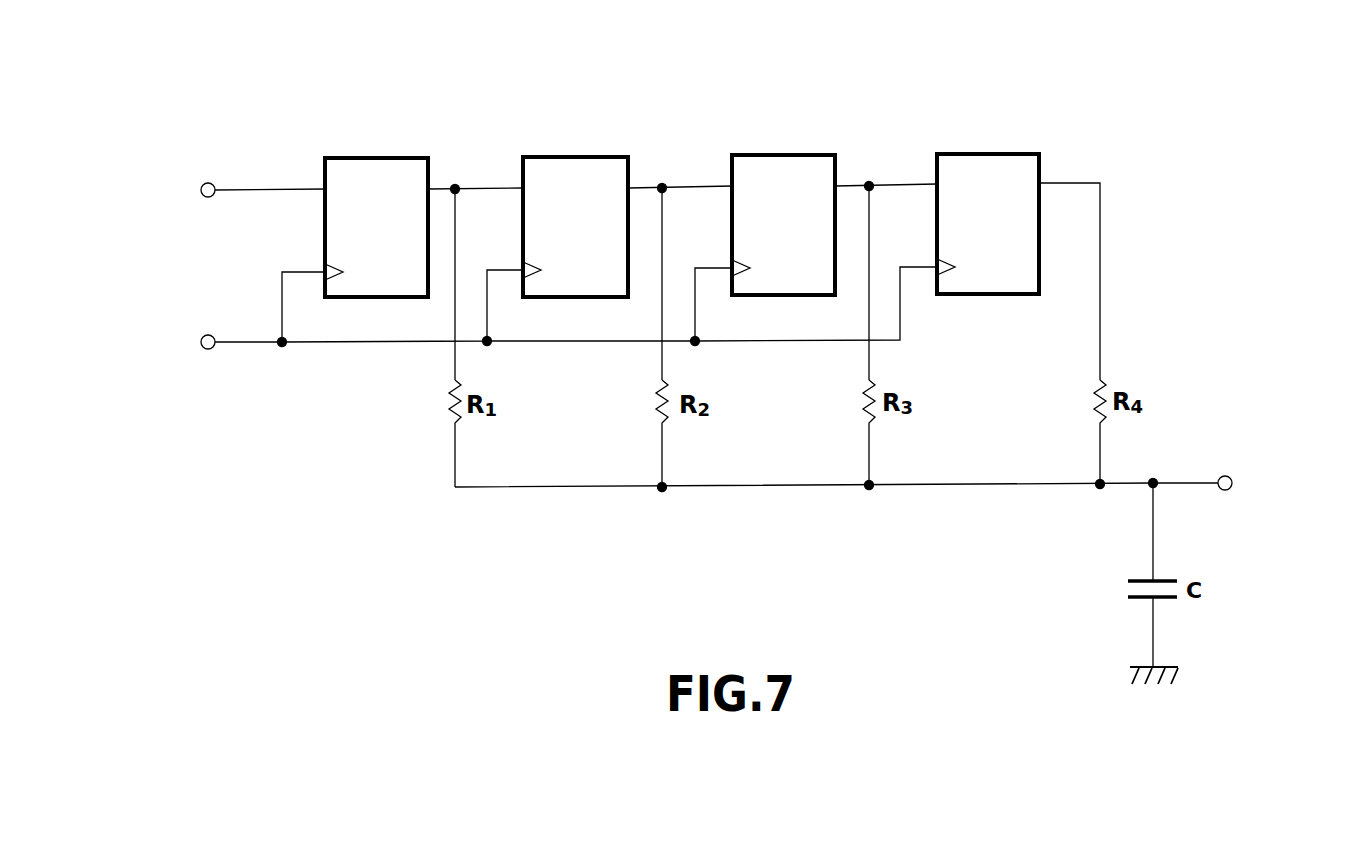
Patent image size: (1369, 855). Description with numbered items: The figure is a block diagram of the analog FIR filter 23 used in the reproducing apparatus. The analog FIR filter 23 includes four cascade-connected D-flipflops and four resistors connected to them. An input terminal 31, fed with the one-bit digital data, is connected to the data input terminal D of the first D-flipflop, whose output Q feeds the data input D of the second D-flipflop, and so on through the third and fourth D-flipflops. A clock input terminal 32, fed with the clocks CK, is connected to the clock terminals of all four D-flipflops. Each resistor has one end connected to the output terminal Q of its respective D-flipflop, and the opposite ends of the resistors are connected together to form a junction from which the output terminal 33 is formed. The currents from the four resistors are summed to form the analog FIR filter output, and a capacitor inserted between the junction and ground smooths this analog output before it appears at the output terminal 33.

The analog FIR filter 23 is at (563, 141).
The input terminal 31 is at (212, 184).
The clock input terminal 32 is at (212, 336).
The output terminal 33 is at (1228, 477).